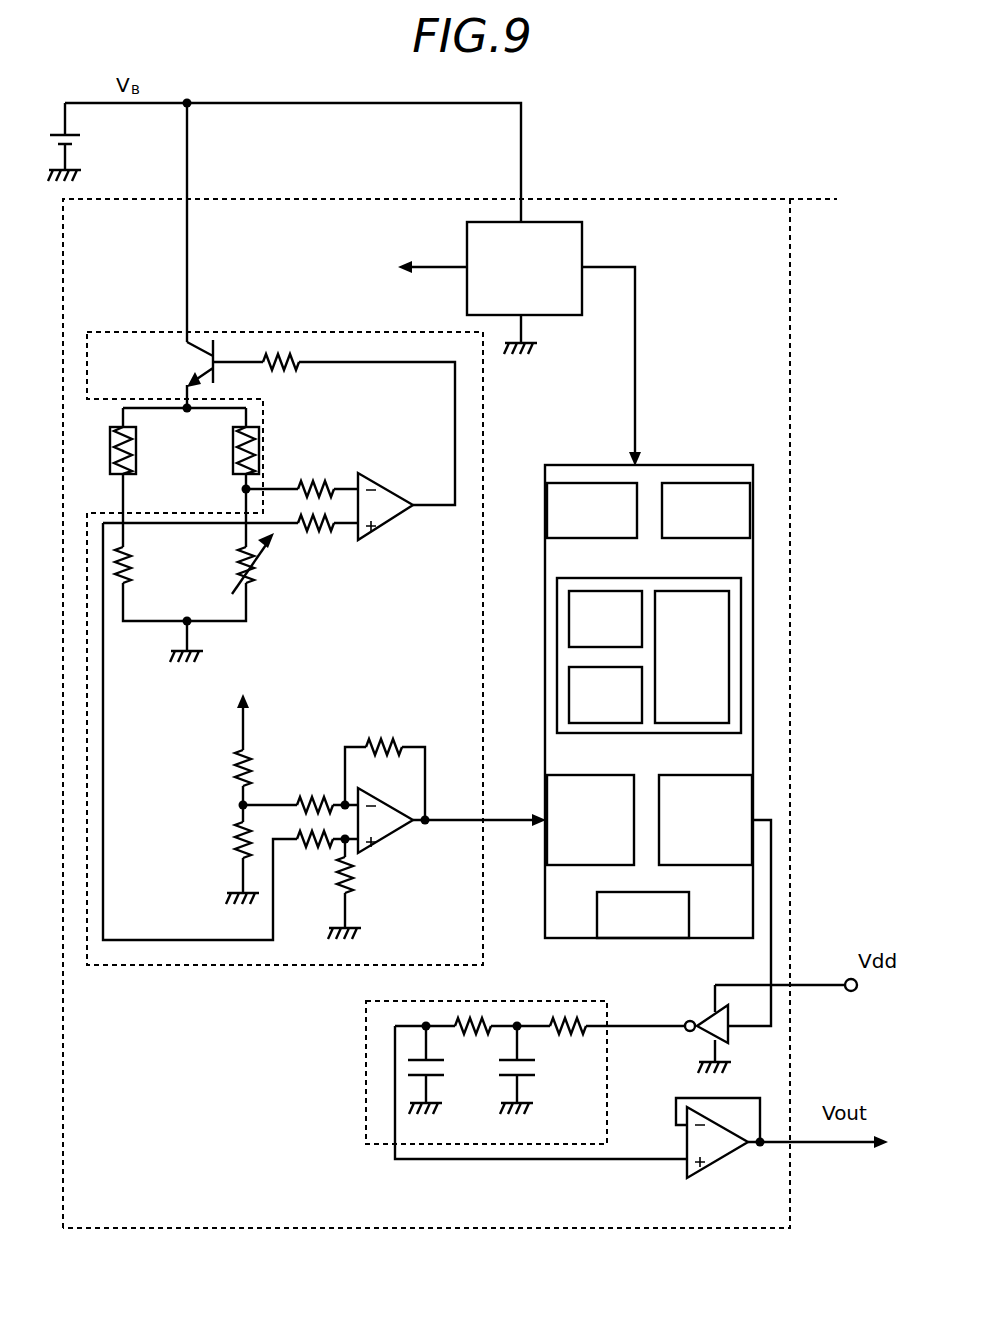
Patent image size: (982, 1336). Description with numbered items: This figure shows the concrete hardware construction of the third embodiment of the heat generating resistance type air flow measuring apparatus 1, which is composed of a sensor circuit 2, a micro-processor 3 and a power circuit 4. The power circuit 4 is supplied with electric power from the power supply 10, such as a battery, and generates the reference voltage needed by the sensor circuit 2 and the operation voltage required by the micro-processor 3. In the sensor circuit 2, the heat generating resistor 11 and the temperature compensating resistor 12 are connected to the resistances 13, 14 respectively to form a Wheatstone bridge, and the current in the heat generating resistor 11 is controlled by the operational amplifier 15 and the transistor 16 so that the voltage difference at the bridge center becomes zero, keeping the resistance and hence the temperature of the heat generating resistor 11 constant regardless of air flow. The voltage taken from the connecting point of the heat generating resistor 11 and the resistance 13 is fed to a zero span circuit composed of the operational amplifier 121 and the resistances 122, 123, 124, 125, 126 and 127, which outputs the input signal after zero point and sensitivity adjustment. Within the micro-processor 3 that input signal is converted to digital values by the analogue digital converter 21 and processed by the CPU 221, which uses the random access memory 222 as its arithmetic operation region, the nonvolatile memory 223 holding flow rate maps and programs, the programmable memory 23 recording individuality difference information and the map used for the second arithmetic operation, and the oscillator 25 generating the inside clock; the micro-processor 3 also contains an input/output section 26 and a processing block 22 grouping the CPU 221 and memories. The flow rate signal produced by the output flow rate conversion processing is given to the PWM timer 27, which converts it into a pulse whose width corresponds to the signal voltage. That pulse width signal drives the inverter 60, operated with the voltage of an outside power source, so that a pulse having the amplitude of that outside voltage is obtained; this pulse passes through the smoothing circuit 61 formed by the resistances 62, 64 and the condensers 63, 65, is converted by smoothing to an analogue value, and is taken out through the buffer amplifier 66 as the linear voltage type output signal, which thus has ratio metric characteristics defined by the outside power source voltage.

The air flow measuring apparatus 1 is at (673, 199).
The sensor circuit 2 is at (265, 332).
The micro-processor 3 is at (676, 465).
The power circuit 4 is at (556, 212).
The power supply 10 is at (79, 138).
The heat generating resistor 11 is at (136, 450).
The temperature compensating resistor 12 is at (233, 462).
The resistance 13 is at (130, 556).
The resistance 14 is at (254, 586).
The operational amplifier 15 is at (378, 536).
The transistor 16 is at (223, 366).
The analogue digital converter 21 is at (560, 858).
The processing unit 22 is at (727, 578).
The programmable memory 23 is at (638, 932).
The oscillator 25 is at (556, 507).
The I/O port 26 is at (710, 487).
The PWM timer 27 is at (753, 790).
The inverter 60 is at (690, 1034).
The smoothing circuit 61 is at (366, 1060).
The resistance 62 is at (573, 1020).
The condenser 63 is at (539, 1066).
The resistance 64 is at (478, 1020).
The condenser 65 is at (448, 1066).
The buffer amplifier 66 is at (720, 1158).
The operational amplifier 121 is at (393, 845).
The resistance 122 is at (325, 850).
The resistance 123 is at (355, 880).
The resistance 124 is at (322, 800).
The resistance 125 is at (384, 744).
The resistance 126 is at (233, 840).
The resistance 127 is at (233, 770).
The CPU 221 is at (727, 641).
The random access memory 222 is at (571, 622).
The nonvolatile memory 223 is at (571, 708).